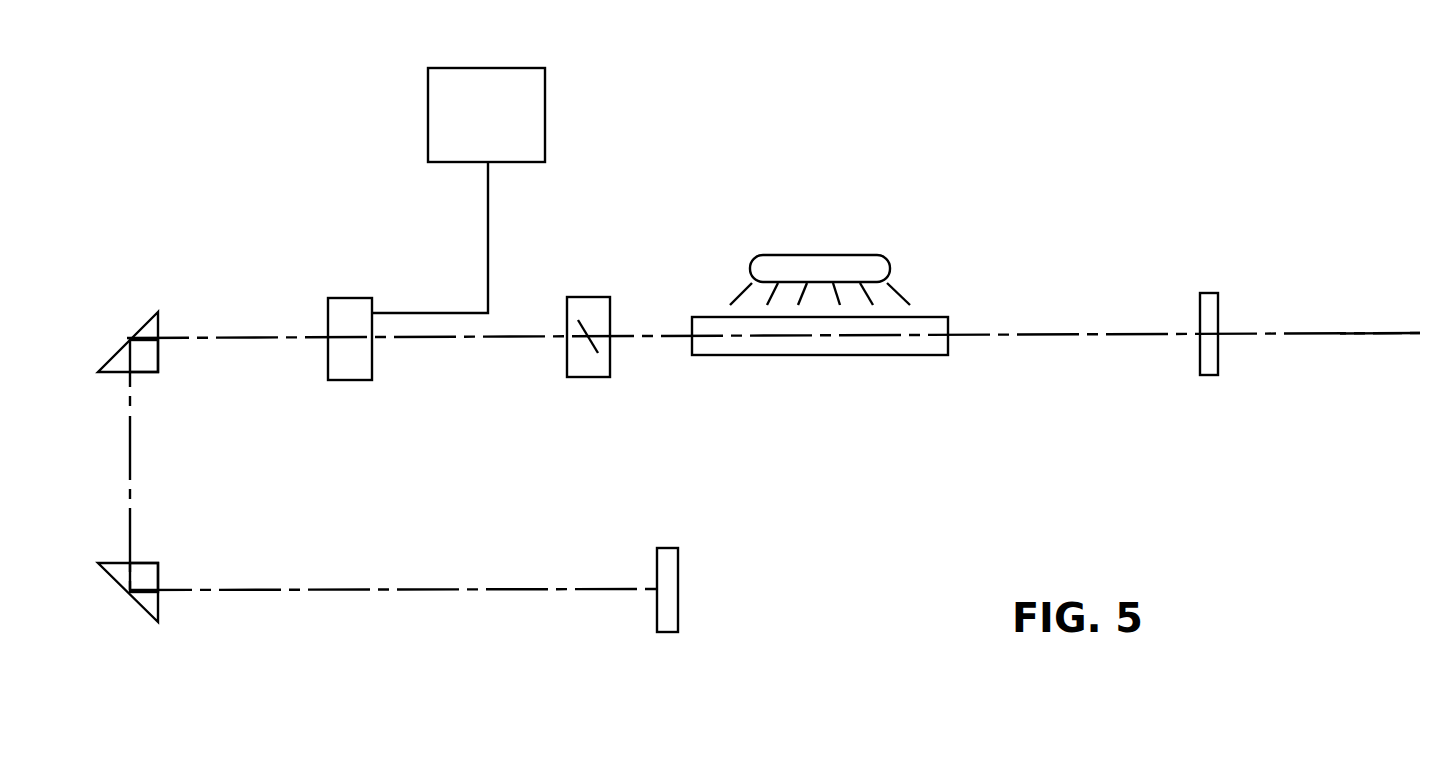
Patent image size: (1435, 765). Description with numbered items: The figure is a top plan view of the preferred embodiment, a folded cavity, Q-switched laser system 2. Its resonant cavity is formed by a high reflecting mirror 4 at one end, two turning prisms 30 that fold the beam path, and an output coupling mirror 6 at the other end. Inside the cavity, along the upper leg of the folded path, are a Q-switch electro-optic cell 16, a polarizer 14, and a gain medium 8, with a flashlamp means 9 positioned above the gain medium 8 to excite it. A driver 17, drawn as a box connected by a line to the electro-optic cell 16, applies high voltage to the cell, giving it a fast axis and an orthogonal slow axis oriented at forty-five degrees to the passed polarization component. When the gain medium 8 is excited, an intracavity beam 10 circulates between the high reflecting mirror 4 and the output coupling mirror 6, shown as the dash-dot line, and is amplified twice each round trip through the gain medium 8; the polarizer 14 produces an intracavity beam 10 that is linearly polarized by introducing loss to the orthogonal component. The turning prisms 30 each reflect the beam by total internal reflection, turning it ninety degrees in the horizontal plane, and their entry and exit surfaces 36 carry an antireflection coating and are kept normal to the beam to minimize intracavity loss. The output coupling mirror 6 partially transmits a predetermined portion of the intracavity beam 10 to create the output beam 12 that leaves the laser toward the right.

The Q-switched laser system 2 is at (998, 132).
The high reflecting mirror 4 is at (668, 550).
The output coupling mirror 6 is at (1210, 298).
The gain medium 8 is at (935, 315).
The flashlamp means 9 is at (875, 253).
The intracavity laser beam 10 is at (1068, 333).
The output beam 12 is at (1340, 332).
The polarizer 14 is at (593, 298).
The Q-switch electro-optic cell 16 is at (352, 298).
The driver 17 is at (547, 92).
The turning prism 30 is at (142, 327).
The antireflection coated surface 36 is at (159, 357).